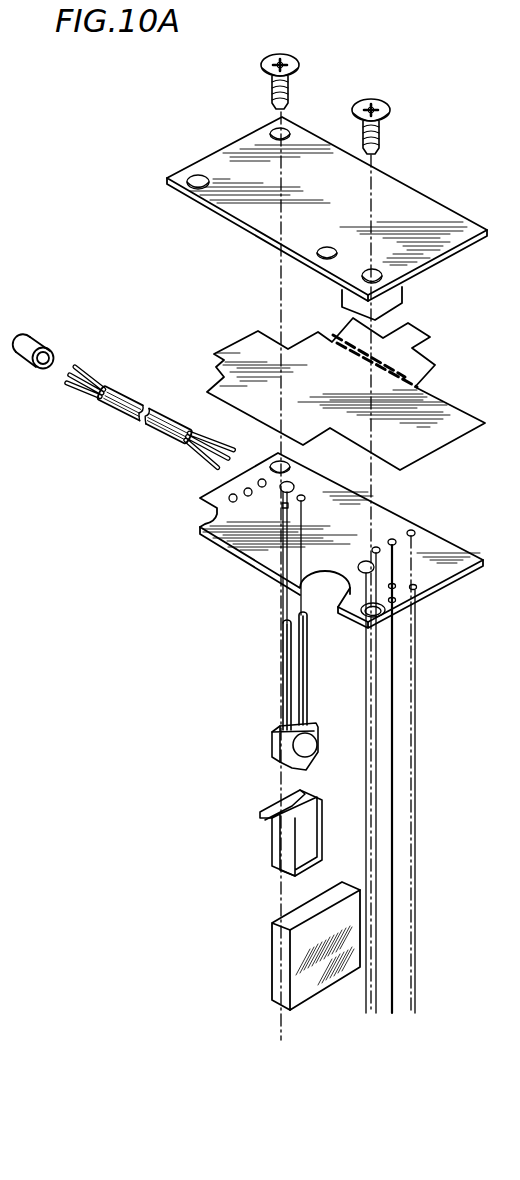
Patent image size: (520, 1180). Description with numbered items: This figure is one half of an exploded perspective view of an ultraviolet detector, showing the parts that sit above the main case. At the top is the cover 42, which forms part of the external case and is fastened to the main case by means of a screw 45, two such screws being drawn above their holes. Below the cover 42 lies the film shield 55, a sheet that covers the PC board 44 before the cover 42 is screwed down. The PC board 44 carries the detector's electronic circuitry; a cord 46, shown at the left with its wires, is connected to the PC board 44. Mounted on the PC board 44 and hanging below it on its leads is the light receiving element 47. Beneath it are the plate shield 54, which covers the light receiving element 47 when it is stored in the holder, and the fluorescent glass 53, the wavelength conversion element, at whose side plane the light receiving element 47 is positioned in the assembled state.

The cover 42 is at (440, 197).
The PC board 44 is at (452, 548).
The screw 45 is at (299, 66).
The cord 46 is at (120, 388).
The light receiving element 47 is at (273, 745).
The fluorescent glass 53 is at (272, 961).
The plate shield 54 is at (272, 841).
The film shield 55 is at (453, 407).